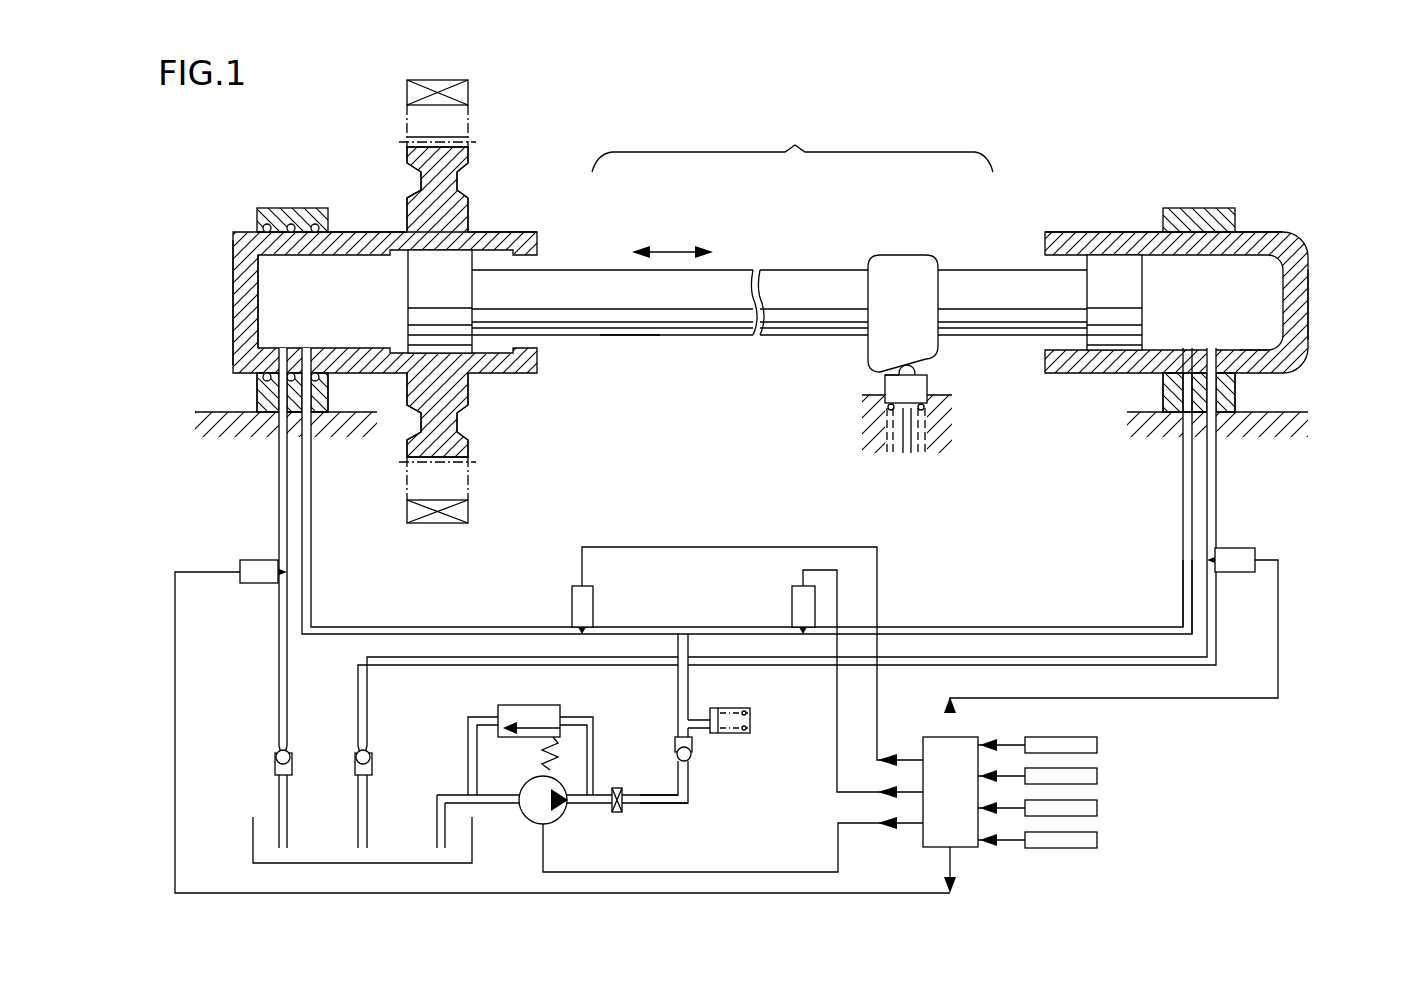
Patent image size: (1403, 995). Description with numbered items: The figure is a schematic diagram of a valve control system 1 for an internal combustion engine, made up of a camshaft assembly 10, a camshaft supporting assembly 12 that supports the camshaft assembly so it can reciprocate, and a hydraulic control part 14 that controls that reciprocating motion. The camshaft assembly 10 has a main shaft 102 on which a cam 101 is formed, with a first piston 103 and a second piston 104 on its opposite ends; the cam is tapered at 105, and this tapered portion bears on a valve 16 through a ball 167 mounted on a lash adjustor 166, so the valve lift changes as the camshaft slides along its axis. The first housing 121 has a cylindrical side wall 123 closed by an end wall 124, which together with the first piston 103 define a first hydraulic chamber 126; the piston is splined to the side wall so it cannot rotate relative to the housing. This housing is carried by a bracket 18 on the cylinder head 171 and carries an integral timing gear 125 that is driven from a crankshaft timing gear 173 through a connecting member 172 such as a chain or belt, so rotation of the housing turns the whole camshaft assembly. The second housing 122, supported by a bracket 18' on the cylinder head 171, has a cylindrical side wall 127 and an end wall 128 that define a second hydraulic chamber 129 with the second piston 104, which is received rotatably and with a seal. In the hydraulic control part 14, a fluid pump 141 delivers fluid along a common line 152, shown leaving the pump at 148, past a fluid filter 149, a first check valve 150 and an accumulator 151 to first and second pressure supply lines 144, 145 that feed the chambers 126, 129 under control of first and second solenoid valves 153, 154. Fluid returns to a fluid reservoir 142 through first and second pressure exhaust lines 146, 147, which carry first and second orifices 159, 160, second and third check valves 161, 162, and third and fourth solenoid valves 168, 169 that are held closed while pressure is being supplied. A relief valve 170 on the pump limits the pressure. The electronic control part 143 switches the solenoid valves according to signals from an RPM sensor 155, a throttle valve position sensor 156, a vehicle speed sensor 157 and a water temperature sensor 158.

The valve control system 1 is at (1320, 232).
The camshaft assembly 10 is at (605, 268).
The camshaft supporting assembly 12 is at (792, 142).
The hydraulic control part 14 is at (1060, 573).
The valve 16 is at (932, 416).
The bracket 18 is at (292, 289).
The bracket 18' is at (1199, 289).
The cam 101 is at (909, 265).
The main shaft 102 is at (634, 338).
The first piston 103 is at (408, 312).
The second piston 104 is at (1140, 290).
The tapered portion 105 is at (927, 373).
The first housing 121 is at (545, 222).
The second housing 122 is at (1036, 222).
The cylindrical side wall 123 is at (371, 232).
The end wall 124 is at (242, 296).
The timing gear 125 is at (466, 160).
The first hydraulic chamber 126 is at (266, 320).
The cylindrical side wall 127 is at (1126, 232).
The end wall 128 is at (1300, 300).
The second hydraulic chamber 129 is at (1275, 335).
The fluid pump 141 is at (530, 818).
The fluid reservoir 142 is at (370, 863).
The electronic control part 143 is at (1008, 852).
The first pressure supply line 144 is at (303, 610).
The second pressure supply line 145 is at (1183, 610).
The first pressure exhaust line 146 is at (279, 614).
The second pressure exhaust line 147 is at (1217, 630).
The pipe 148 is at (689, 800).
The fluid filter 149 is at (617, 813).
The first check valve 150 is at (700, 757).
The accumulator 151 is at (750, 720).
The common line 152 is at (653, 795).
The first solenoid valve 153 is at (572, 606).
The second solenoid valve 154 is at (792, 606).
The RPM sensor 155 is at (1097, 745).
The throttle valve position sensor 156 is at (1097, 776).
The vehicle speed sensor 157 is at (1097, 808).
The water temperature sensor 158 is at (1097, 840).
The first orifice 159 is at (268, 748).
The orifice 160 is at (380, 748).
The second check valve 161 is at (265, 778).
The third check valve 162 is at (383, 778).
The lash adjustor 166 is at (875, 398).
The ball 167 is at (881, 377).
The third solenoid valve 168 is at (254, 562).
The fourth solenoid valve 169 is at (1243, 550).
The relief valve 170 is at (578, 707).
The cylinder head 171 is at (221, 430).
The connecting member 172 is at (470, 472).
The crankshaft timing gear 173 is at (470, 510).